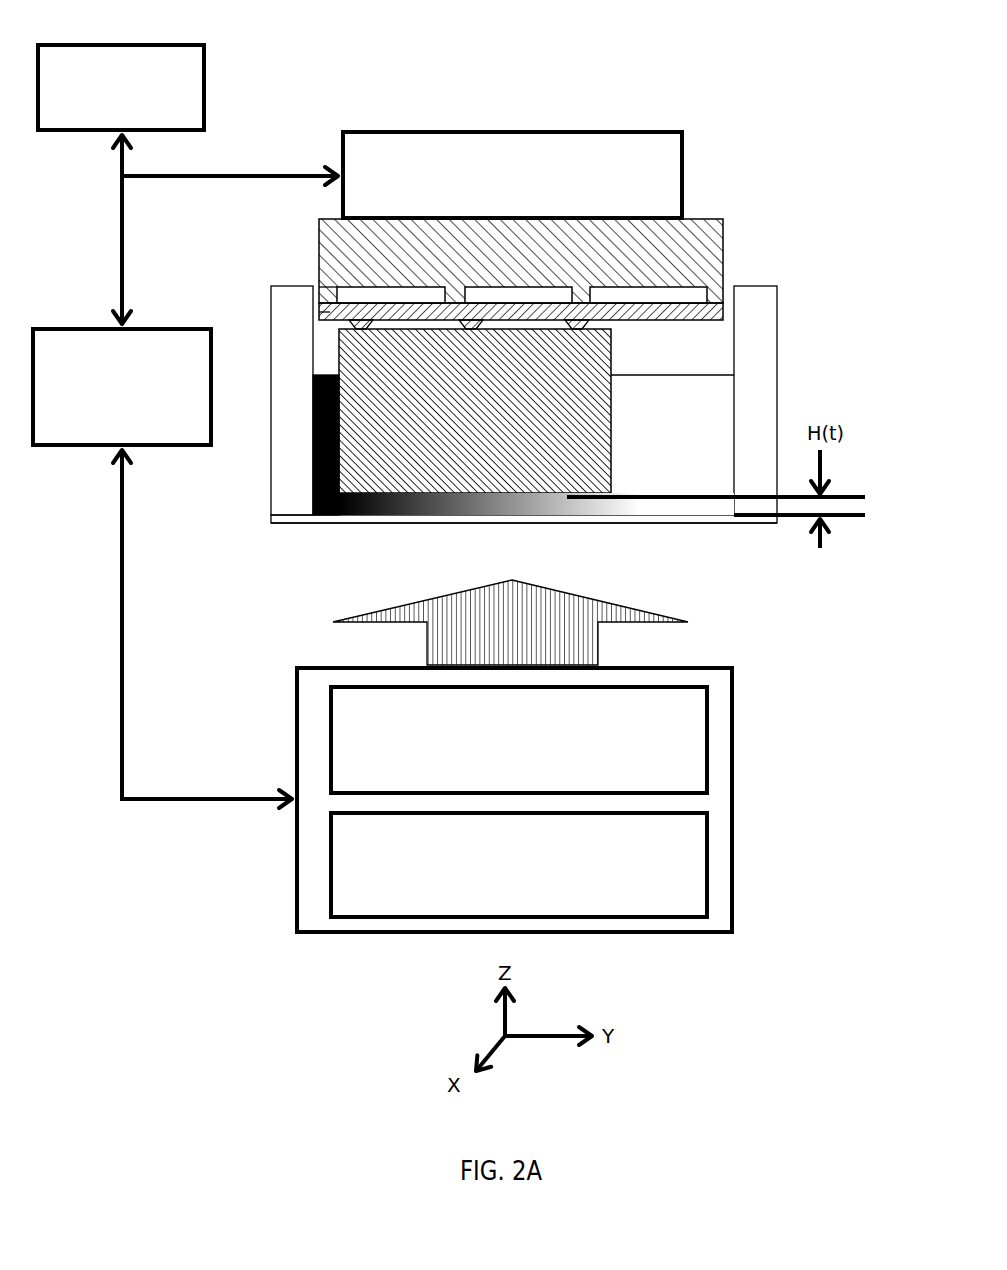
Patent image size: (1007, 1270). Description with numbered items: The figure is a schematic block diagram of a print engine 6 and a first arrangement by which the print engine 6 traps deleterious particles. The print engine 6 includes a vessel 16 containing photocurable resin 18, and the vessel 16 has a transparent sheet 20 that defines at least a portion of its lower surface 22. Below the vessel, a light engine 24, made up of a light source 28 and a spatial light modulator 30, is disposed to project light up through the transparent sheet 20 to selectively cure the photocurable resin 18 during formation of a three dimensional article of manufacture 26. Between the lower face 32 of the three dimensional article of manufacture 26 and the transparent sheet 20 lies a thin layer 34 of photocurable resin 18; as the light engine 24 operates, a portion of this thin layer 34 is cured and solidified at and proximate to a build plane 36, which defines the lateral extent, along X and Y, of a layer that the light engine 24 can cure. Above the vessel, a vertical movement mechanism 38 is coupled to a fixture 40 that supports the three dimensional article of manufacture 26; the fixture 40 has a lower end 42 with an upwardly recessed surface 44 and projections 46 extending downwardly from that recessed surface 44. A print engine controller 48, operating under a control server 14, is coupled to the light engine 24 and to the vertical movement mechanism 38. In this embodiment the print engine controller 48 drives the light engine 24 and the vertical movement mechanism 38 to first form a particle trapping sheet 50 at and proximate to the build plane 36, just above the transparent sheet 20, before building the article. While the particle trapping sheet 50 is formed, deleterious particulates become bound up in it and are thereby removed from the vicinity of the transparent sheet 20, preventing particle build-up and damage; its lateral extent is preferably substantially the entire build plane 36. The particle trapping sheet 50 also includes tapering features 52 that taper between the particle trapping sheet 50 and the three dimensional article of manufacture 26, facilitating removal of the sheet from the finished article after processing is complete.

The print engine 6 is at (656, 85).
The control server 14 is at (204, 85).
The vessel 16 is at (797, 340).
The photocurable resin 18 is at (662, 402).
The transparent sheet 20 is at (720, 522).
The lower surface 22 is at (303, 525).
The light engine 24 is at (732, 720).
The three dimensional article of manufacture 26 is at (313, 463).
The light source 28 is at (707, 872).
The spatial light modulator 30 is at (707, 775).
The lower face 32 is at (360, 507).
The thin layer 34 is at (435, 505).
The build plane 36 is at (527, 500).
The vertical movement mechanism 38 is at (682, 175).
The fixture 40 is at (723, 247).
The lower end 42 is at (712, 285).
The upwardly recessed surface 44 is at (387, 287).
The projections 46 is at (328, 293).
The print engine controller 48 is at (87, 445).
The particle trapping sheet 50 is at (325, 312).
The tapering features 52 is at (353, 325).